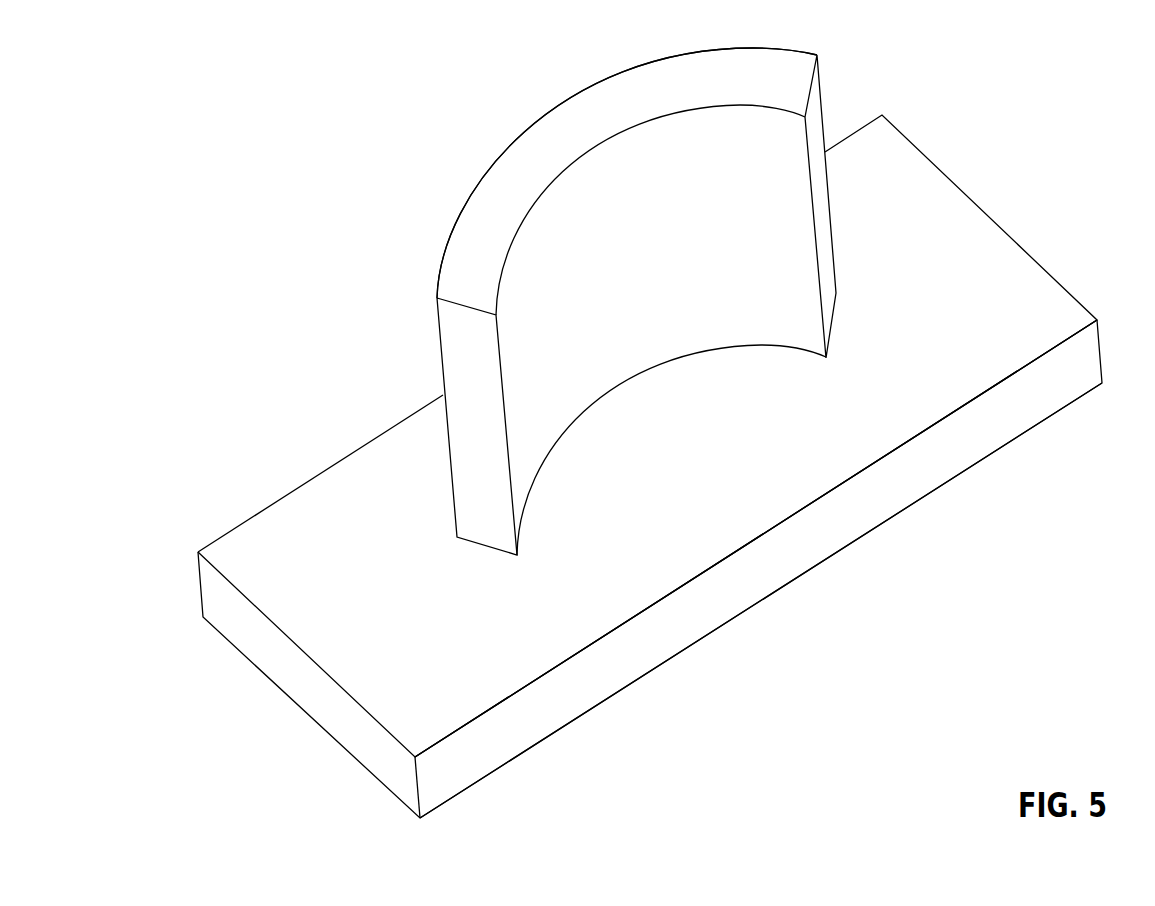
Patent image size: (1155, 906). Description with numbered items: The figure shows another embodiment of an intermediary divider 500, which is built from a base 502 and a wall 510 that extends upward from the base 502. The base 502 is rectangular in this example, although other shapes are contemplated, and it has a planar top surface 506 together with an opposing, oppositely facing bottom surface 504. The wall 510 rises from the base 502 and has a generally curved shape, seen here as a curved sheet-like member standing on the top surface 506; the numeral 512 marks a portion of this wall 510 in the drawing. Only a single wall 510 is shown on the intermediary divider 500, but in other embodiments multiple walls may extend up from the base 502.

The intermediary divider 500 is at (306, 78).
The base 502 is at (1043, 290).
The bottom surface 504 is at (906, 488).
The planar top surface 506 is at (760, 487).
The wall 510 is at (663, 155).
The outer surface of curved member 512 is at (500, 180).